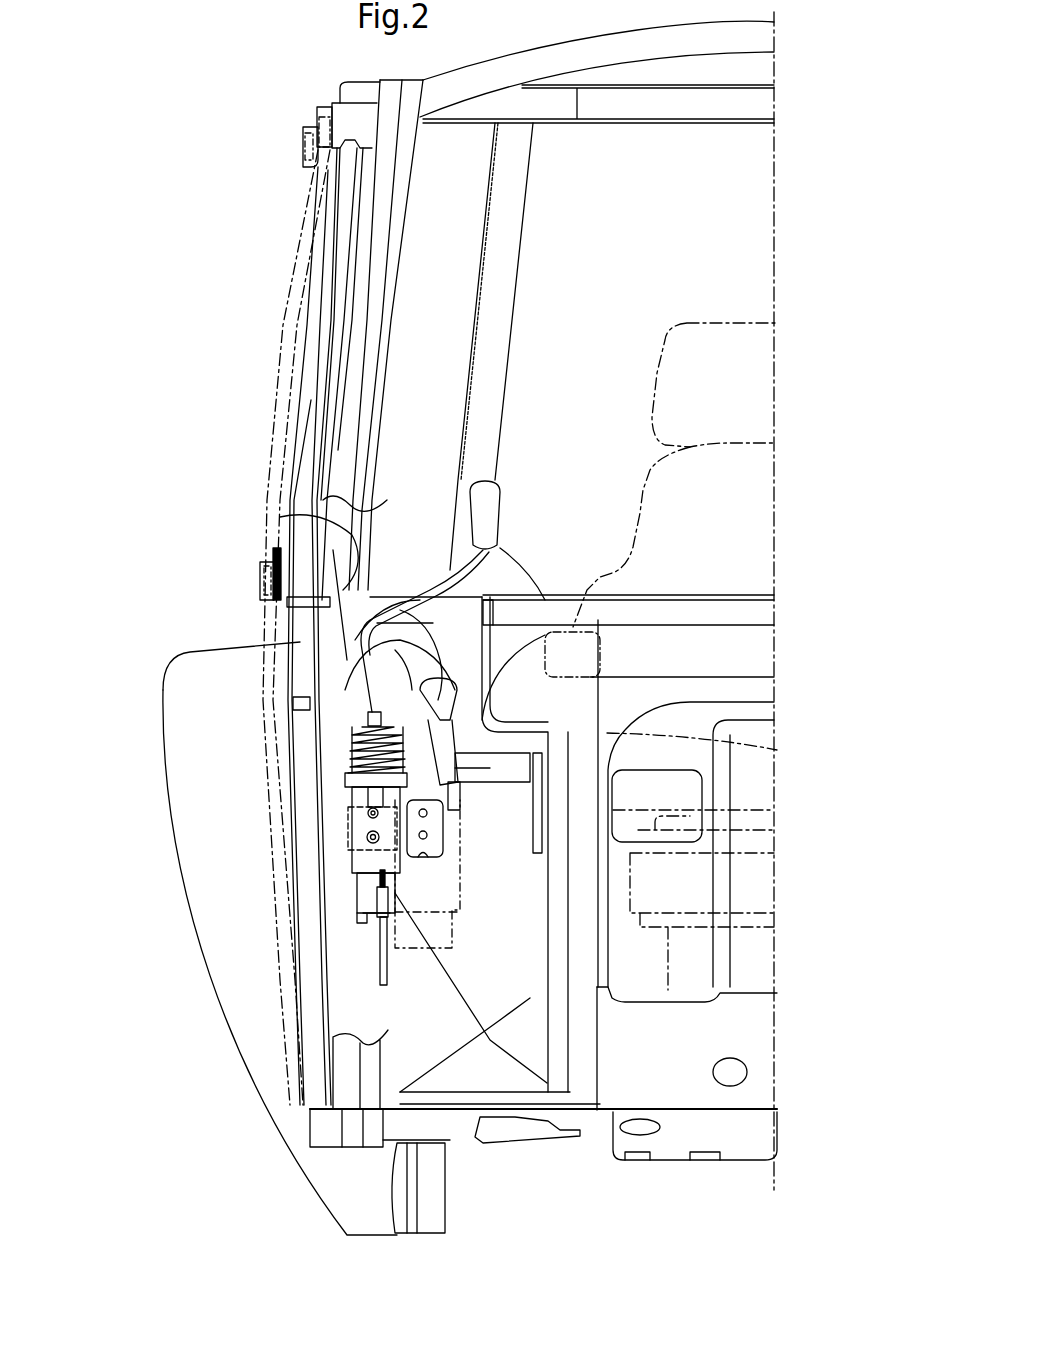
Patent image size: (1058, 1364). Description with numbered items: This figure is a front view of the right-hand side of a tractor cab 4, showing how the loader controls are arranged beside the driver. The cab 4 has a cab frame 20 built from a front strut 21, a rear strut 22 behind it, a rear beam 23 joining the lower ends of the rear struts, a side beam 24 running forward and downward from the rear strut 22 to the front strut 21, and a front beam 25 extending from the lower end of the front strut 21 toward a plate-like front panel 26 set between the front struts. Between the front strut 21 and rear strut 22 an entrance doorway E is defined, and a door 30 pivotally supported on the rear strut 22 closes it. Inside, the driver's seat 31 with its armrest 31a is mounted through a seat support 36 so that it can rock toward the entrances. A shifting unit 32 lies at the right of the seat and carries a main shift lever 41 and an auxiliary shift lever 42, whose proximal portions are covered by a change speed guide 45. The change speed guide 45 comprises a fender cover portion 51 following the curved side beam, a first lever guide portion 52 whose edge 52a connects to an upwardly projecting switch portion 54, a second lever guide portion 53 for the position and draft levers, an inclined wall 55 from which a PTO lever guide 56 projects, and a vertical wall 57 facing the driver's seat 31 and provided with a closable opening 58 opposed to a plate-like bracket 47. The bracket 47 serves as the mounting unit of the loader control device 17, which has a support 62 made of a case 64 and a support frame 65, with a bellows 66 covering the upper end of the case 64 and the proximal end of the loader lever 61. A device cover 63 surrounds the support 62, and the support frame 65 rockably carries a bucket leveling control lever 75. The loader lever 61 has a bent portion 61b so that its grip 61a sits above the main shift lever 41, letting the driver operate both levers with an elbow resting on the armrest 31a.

The cab 4 is at (801, 142).
The loader control device 17 is at (318, 1057).
The cab frame 20 is at (256, 110).
The front strut 21 is at (375, 190).
The rear strut 22 is at (328, 282).
The rear beam 23 is at (730, 612).
The side beam 24 is at (293, 703).
The front beam 25 is at (397, 1143).
The front panel 26 is at (750, 688).
The door 30 is at (268, 450).
The driver's seat 31 is at (727, 443).
The armrest 31a is at (590, 580).
The shifting unit 32 is at (379, 576).
The seat support 36 is at (740, 913).
The main shift lever 41 is at (322, 615).
The auxiliary shift lever 42 is at (420, 688).
The change speed guide 45 is at (505, 923).
The bracket 47 is at (437, 890).
The fender cover portion 51 is at (368, 880).
The first lever guide portion 52 is at (433, 693).
The edge of first lever guide portion 52a is at (480, 801).
The second lever guide portion 53 is at (533, 735).
The switch portion 54 is at (392, 543).
The inclined wall 55 is at (450, 615).
The PTO lever guide 56 is at (433, 645).
The vertical wall 57 is at (513, 887).
The closable opening 58 is at (423, 857).
The loader lever 61 is at (521, 427).
The grip 61a is at (495, 495).
The bent portion 61b is at (447, 605).
The support 62 is at (241, 848).
The device cover 63 is at (330, 745).
The case 64 is at (348, 815).
The support frame 65 is at (362, 873).
The bellows 66 is at (343, 773).
The bucket leveling control lever 75 is at (357, 939).
The entrance doorway E is at (256, 361).